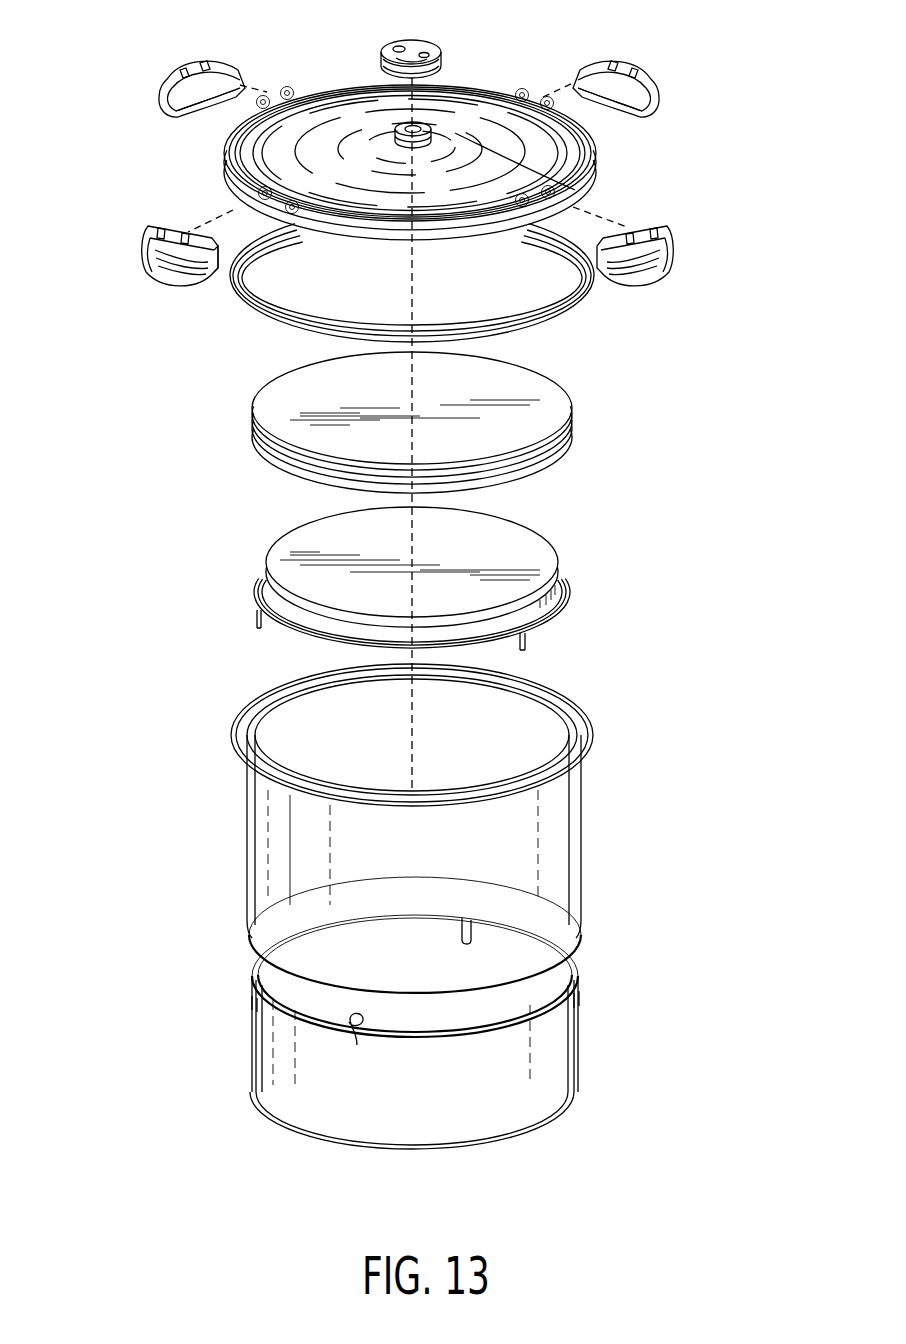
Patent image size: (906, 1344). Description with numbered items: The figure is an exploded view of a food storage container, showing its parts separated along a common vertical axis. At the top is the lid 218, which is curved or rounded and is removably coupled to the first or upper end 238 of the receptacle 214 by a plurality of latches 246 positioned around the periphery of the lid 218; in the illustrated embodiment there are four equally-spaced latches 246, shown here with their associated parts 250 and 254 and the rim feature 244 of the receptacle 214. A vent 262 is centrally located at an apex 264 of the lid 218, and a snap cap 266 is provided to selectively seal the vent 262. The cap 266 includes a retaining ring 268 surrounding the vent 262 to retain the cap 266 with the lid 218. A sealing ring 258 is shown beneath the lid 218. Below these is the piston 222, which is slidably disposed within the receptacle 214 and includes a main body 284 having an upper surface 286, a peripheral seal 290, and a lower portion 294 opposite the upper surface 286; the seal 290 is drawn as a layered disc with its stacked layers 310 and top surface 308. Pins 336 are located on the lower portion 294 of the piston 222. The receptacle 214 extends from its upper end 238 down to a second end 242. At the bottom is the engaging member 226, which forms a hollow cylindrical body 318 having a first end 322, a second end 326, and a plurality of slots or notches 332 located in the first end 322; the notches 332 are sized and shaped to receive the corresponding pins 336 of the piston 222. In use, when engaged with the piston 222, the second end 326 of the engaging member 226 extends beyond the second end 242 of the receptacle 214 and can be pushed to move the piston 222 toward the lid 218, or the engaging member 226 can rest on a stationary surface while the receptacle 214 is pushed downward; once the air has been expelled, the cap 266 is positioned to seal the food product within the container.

The receptacle 214 is at (416, 828).
The lid 218 is at (490, 116).
The piston 222 is at (597, 507).
The engaging member 226 is at (412, 1060).
The first or upper end 238 is at (240, 727).
The second end 242 is at (250, 944).
The outer rim of pot 244 is at (592, 722).
The latch 246 is at (163, 98).
The handle lip 250 is at (209, 113).
The handle latch 254 is at (202, 62).
The sealing ring 258 is at (563, 314).
The vent 262 is at (574, 187).
The apex 264 is at (380, 140).
The cap 266 is at (412, 42).
The retaining ring 268 is at (387, 74).
The main body 284 is at (408, 592).
The upper surface 286 is at (545, 612).
The peripheral seal 290 is at (419, 427).
The lower portion 294 is at (325, 640).
The top surface of disc 308 is at (443, 446).
The stacked layers 310 is at (249, 440).
The hollow cylindrical body 318 is at (508, 1118).
The first end 322 is at (357, 1045).
The second end 326 is at (408, 1146).
The notches 332 is at (473, 928).
The pins 336 is at (255, 620).